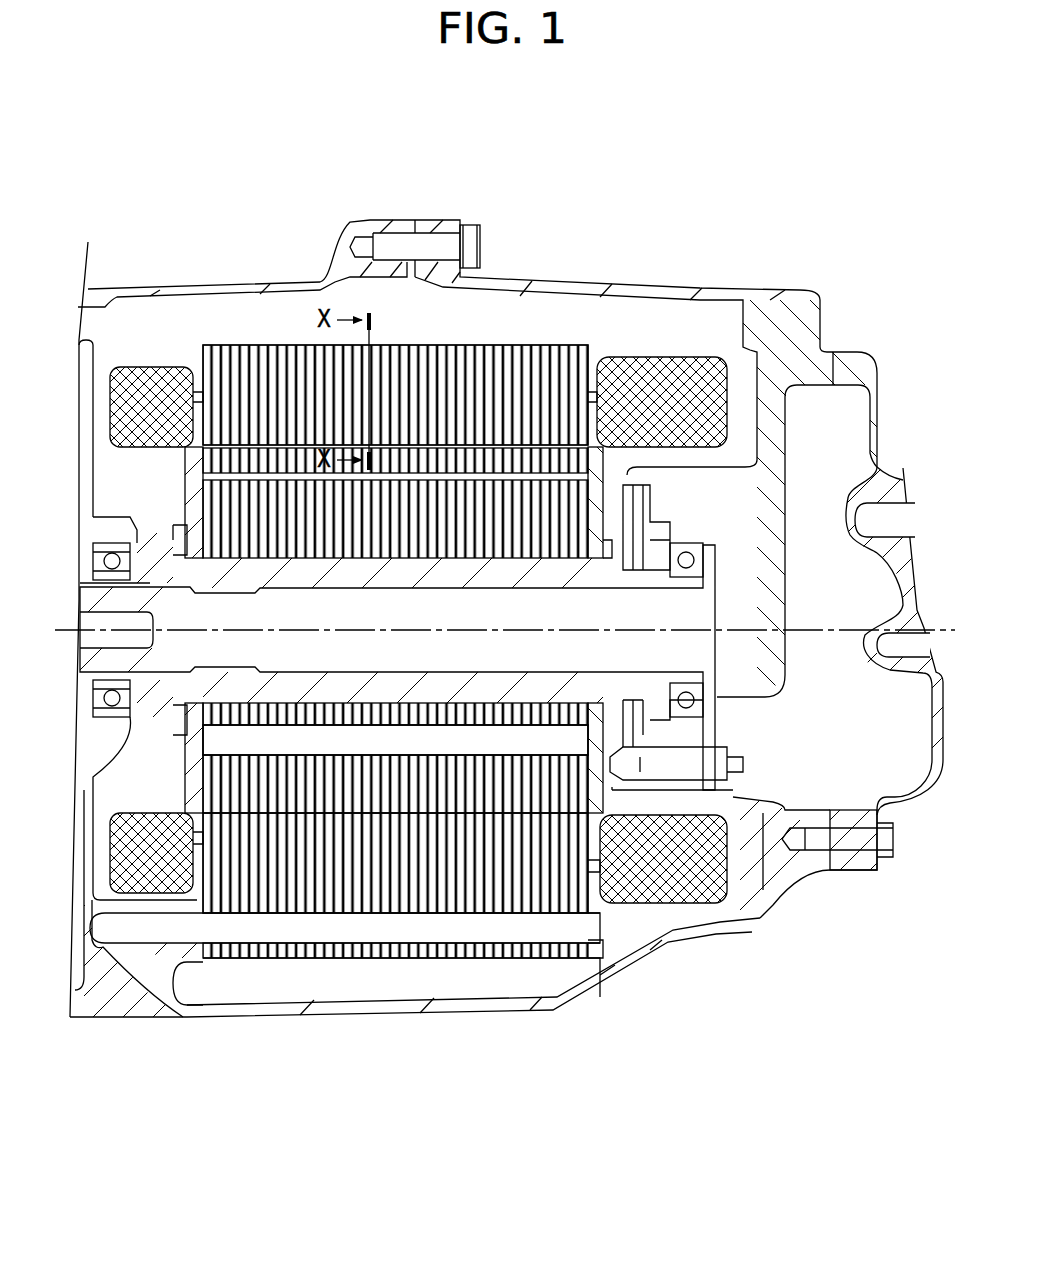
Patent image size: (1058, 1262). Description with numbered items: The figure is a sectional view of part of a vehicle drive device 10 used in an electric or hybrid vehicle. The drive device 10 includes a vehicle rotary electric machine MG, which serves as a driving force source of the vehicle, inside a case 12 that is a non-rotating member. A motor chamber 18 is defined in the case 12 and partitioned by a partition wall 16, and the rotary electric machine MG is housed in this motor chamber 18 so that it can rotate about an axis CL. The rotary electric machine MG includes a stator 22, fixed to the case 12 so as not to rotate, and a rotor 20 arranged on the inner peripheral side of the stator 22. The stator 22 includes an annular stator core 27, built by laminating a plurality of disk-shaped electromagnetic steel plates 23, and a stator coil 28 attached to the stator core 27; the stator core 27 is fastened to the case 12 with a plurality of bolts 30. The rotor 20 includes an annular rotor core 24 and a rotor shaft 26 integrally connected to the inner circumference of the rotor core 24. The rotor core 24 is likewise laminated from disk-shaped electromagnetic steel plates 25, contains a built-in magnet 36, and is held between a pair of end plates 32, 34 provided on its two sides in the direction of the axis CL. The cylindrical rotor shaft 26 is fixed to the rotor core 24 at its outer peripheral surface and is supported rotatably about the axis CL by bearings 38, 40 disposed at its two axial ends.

The vehicle drive device 10 is at (243, 147).
The vehicle rotary electric machine MG is at (432, 340).
The case 12 is at (505, 258).
The partition wall 16 is at (83, 492).
The motor chamber 18 is at (157, 350).
The rotor 20 is at (168, 768).
The stator 22 is at (397, 980).
The electromagnetic steel plates 23 is at (250, 960).
The rotor core 24 is at (487, 805).
The electromagnetic steel plates 25 is at (227, 787).
The rotor shaft 26 is at (497, 597).
The stator core 27 is at (270, 970).
The stator coil 28 is at (647, 352).
The bolts 30 is at (553, 927).
The end plate 32 is at (197, 504).
The end plate 34 is at (598, 788).
The magnet 36 is at (332, 742).
The bearing 38 is at (95, 560).
The bearing 40 is at (705, 552).
The axis CL is at (62, 642).